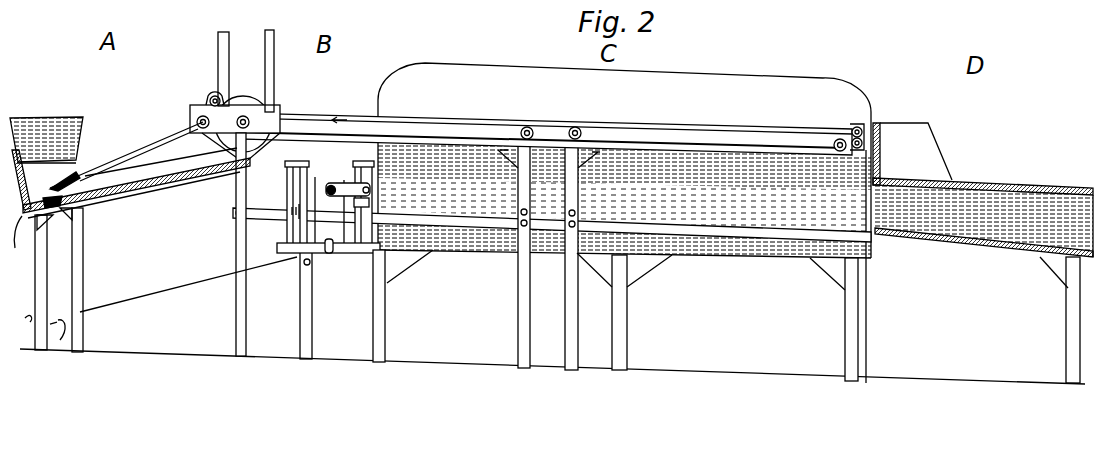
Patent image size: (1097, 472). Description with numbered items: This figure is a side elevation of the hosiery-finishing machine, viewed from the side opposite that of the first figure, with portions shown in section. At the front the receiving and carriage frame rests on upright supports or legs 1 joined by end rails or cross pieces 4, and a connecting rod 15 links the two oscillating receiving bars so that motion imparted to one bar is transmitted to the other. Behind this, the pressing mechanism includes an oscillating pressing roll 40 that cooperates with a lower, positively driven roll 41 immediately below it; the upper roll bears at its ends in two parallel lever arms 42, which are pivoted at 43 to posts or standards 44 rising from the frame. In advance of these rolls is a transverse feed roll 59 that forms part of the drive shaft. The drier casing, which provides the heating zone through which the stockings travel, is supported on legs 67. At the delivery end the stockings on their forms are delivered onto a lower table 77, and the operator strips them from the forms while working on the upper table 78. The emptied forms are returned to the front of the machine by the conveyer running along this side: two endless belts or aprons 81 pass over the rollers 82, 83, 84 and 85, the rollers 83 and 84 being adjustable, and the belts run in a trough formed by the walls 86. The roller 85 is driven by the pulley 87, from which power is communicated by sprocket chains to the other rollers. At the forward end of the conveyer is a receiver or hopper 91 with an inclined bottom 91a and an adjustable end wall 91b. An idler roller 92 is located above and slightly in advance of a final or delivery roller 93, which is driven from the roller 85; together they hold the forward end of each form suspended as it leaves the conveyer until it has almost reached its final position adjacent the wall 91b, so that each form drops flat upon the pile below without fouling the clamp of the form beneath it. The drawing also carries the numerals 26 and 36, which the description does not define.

The upright supports or legs 1 is at (47, 276).
The end rails or cross pieces 4 is at (46, 223).
The connecting rod 15 is at (298, 211).
The rod 26 is at (158, 141).
The hopper 36 is at (46, 140).
The oscillating pressing roll 40 is at (372, 190).
The lower positively driven roll 41 is at (370, 205).
The lever arms 42 is at (343, 182).
The pivot 43 is at (330, 184).
The posts or standards 44 is at (337, 230).
The transverse feed roll 59 is at (288, 201).
The legs 67 is at (386, 320).
The lower table 77 is at (980, 250).
The upper table 78 is at (988, 183).
The endless belts or aprons 81 is at (371, 118).
The roller 82 is at (836, 140).
The roller 83 is at (577, 127).
The roller 84 is at (525, 127).
The roller 85 is at (245, 116).
The walls 86 is at (318, 113).
The pulley 87 is at (262, 108).
The receiver or hopper 91 is at (88, 167).
The inclined bottom 91a is at (128, 192).
The end wall 91b is at (15, 244).
The idler roller 92 is at (198, 116).
The final or delivery roller 93 is at (211, 95).